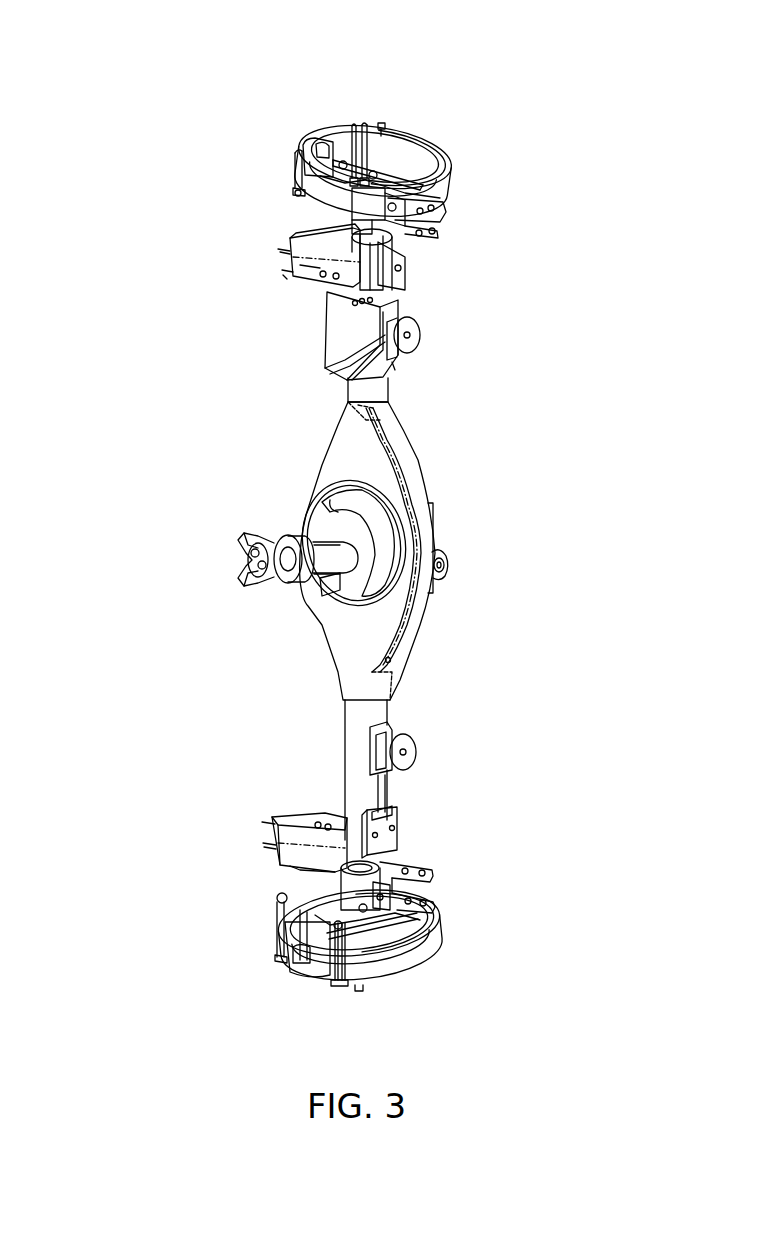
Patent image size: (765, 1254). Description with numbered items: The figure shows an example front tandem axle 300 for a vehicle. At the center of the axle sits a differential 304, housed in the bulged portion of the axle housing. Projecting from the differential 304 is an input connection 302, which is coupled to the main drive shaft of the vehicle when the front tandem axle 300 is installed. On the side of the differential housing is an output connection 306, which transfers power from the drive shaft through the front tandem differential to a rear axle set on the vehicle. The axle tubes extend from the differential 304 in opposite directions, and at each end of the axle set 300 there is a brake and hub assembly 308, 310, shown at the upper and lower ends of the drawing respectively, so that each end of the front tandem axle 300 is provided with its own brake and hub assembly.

The front tandem axle 300 is at (345, 525).
The input connection 302 is at (220, 600).
The differential 304 is at (443, 480).
The output connection 306 is at (465, 594).
The brake and hub assembly 308 is at (490, 194).
The brake and hub assembly 310 is at (446, 954).